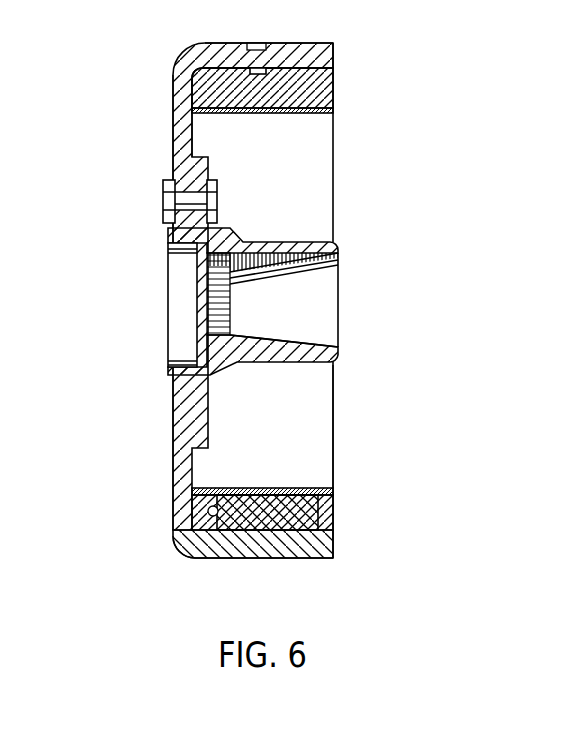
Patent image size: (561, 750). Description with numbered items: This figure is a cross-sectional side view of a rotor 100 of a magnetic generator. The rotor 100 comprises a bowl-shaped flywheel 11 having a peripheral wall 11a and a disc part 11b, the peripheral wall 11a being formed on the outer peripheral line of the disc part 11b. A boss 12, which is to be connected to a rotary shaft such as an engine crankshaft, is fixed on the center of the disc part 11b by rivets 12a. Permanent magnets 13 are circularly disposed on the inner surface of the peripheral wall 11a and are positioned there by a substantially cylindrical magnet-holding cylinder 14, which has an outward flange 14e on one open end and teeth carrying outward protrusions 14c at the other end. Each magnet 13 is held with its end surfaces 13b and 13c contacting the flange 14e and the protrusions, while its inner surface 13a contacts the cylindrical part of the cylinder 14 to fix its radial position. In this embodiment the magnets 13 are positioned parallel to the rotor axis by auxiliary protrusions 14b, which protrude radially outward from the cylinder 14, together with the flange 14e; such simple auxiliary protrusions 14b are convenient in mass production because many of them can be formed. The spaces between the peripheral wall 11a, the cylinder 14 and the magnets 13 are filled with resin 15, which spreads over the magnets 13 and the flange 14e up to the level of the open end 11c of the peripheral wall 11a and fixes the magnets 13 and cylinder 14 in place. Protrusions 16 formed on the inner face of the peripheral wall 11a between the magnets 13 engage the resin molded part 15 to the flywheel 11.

The rotor 100 is at (333, 38).
The flywheel 11 is at (180, 54).
The peripheral wall 11a is at (334, 52).
The disc part 11b is at (178, 125).
The open end 11c is at (334, 385).
The boss 12 is at (331, 241).
The rivets 12a is at (168, 204).
The permanent magnets 13 is at (265, 522).
The inner surface 13a is at (229, 488).
The end surface 13b is at (318, 536).
The end surface 13c is at (192, 552).
The magnet-holding cylinder 14 is at (272, 114).
The auxiliary protrusions 14b is at (185, 491).
The outward protrusions 14c is at (175, 94).
The outward flange 14e is at (334, 109).
The resin molded part 15 is at (334, 90).
The protrusions 16 is at (232, 114).